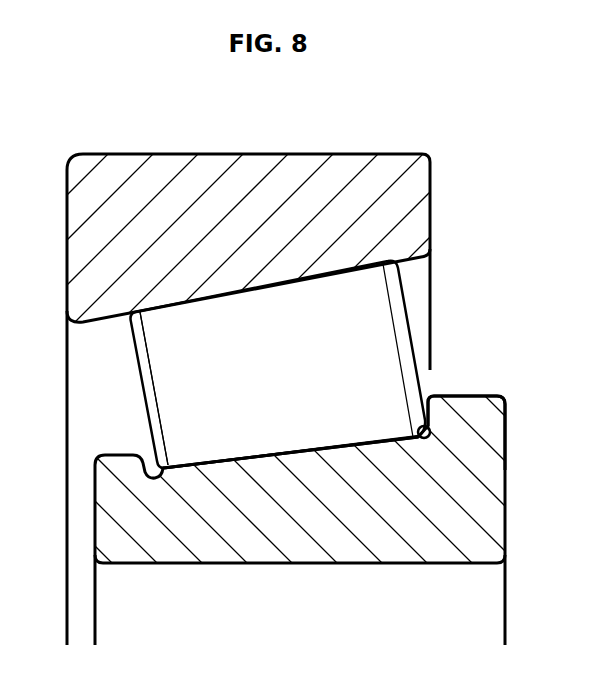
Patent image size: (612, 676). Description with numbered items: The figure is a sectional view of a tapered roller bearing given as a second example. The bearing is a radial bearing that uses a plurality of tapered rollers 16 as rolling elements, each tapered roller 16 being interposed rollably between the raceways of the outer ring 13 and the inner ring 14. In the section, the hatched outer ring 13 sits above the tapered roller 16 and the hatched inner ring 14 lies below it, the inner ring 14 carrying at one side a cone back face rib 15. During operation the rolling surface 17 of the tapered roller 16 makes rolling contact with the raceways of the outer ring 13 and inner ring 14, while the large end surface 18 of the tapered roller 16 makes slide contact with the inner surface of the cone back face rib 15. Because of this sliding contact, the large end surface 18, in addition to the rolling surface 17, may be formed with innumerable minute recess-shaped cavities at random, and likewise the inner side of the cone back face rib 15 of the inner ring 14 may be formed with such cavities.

The outer ring 13 is at (213, 165).
The inner ring 14 is at (355, 553).
The cone back face rib 15 is at (470, 413).
The tapered roller 16 is at (170, 380).
The rolling surface 17 is at (265, 457).
The large end surface 18 is at (407, 300).